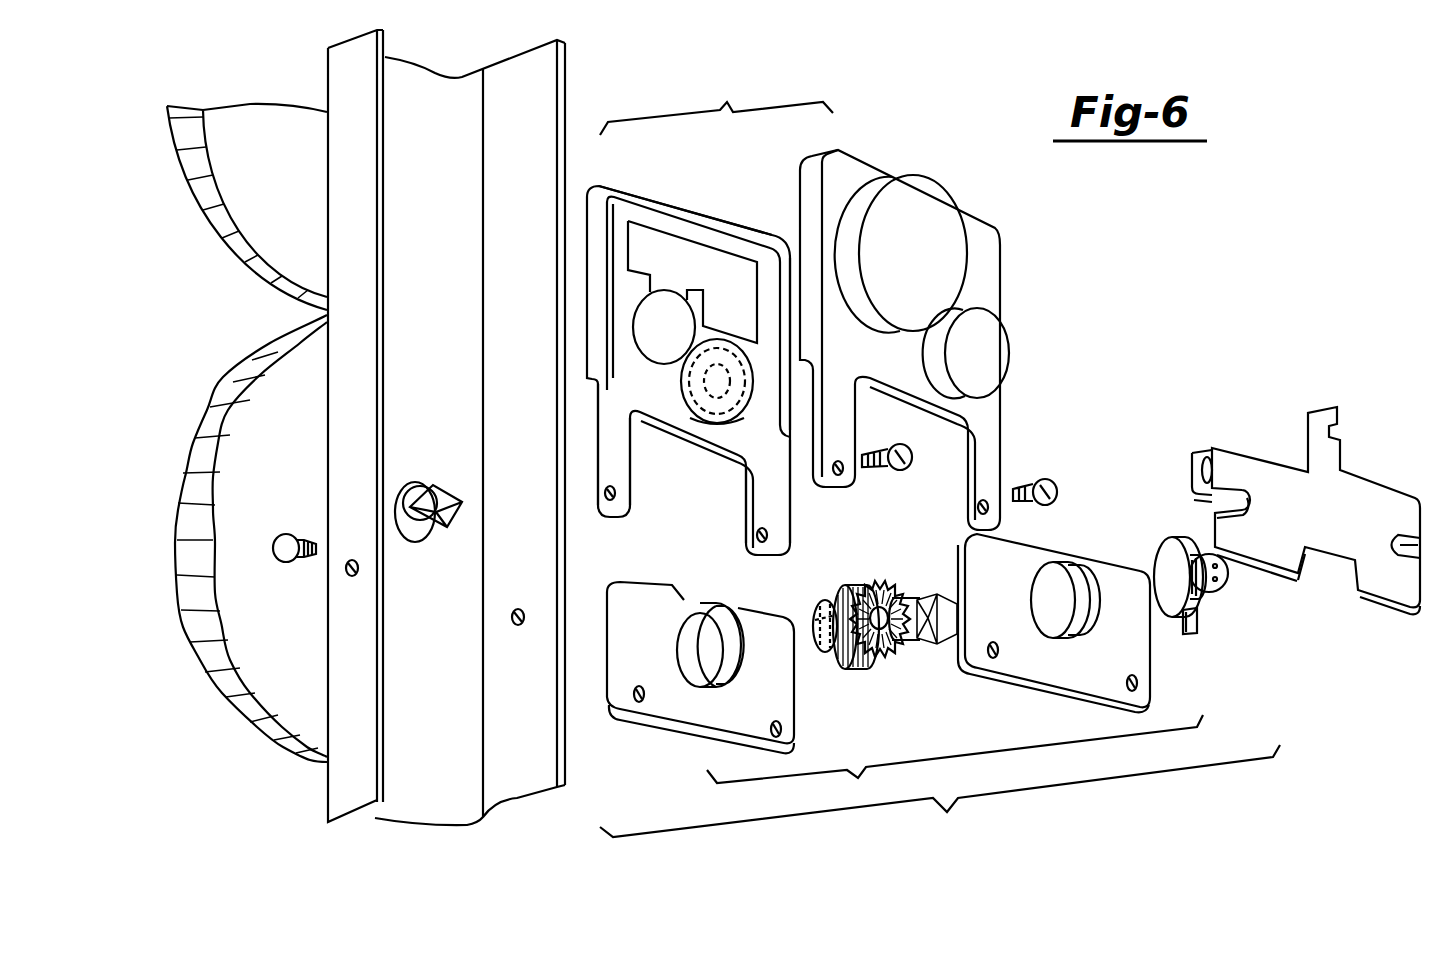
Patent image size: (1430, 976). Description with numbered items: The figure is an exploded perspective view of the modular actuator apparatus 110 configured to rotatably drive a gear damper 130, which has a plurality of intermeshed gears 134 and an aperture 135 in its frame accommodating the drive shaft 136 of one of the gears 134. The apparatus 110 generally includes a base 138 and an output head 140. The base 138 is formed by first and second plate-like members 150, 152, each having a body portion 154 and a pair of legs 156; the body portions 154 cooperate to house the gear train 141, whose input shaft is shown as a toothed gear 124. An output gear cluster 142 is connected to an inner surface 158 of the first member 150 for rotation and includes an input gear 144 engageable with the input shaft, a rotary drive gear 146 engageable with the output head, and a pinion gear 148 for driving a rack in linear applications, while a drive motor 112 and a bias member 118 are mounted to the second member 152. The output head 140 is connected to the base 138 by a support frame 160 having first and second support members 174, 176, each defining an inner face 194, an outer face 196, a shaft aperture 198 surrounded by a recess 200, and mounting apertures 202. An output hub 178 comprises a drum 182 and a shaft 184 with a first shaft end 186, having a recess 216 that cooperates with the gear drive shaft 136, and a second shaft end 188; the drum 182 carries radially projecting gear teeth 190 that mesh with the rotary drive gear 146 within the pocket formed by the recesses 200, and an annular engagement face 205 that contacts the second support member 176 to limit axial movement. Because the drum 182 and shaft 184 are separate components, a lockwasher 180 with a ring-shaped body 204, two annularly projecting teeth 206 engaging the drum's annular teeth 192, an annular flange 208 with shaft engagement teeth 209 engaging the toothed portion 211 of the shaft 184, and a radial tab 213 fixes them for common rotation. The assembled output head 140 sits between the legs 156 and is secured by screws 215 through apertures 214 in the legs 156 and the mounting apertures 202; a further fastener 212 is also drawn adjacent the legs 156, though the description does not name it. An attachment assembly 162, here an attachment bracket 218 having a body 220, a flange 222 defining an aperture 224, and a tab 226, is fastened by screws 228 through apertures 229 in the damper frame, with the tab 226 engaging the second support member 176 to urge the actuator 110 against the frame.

The modular actuator apparatus 110 is at (902, 130).
The drive motor 112 is at (983, 342).
The bias member 118 is at (930, 210).
The toothed gear 124 is at (664, 327).
The gear damper 130 is at (297, 86).
The intermeshed gears 134 is at (243, 175).
The aperture 135 is at (412, 482).
The drive shaft 136 is at (437, 522).
The base 138 is at (716, 96).
The output head 140 is at (940, 776).
The gear train 141 is at (696, 300).
The output gear cluster 142 is at (666, 408).
The input gear 144 is at (717, 433).
The rotary drive gear 146 is at (752, 380).
The pinion gear 148 is at (703, 383).
The first plate-like member 150 is at (782, 348).
The second plate-like member 152 is at (944, 330).
The body portion 154 is at (588, 272).
The legs 156 is at (592, 428).
The inner surface 158 is at (767, 273).
The support frame 160 is at (850, 675).
The attachment assembly 162 is at (1290, 422).
The first support member 174 is at (640, 712).
The second support member 176 is at (1060, 690).
The output hub 178 is at (896, 635).
The lockwasher 180 is at (1172, 591).
The drum 182 is at (895, 663).
The shaft 184 is at (836, 670).
The first shaft end 186 is at (817, 615).
The second shaft end 188 is at (957, 642).
The gear teeth 190 is at (855, 583).
The annular teeth 192 is at (937, 647).
The inner face 194 is at (690, 722).
The outer face 196 is at (607, 655).
The shaft aperture 198 is at (707, 680).
The recess 200 is at (740, 645).
The mounting apertures 202 is at (1125, 683).
The ring-shaped body 204 is at (1190, 560).
The annular engagement face 205 is at (882, 600).
The annularly projecting teeth 206 is at (1153, 567).
The annular flange 208 is at (1197, 618).
The shaft engagement teeth 209 is at (1210, 582).
The toothed portion 211 is at (900, 603).
The screw 212 is at (912, 452).
The radial tab 213 is at (1192, 637).
The apertures 214 is at (618, 497).
The screws 215 is at (1050, 485).
The recess 216 is at (825, 604).
The attachment bracket 218 is at (1286, 480).
The body 220 is at (1328, 523).
The flange 222 is at (1223, 460).
The aperture 224 is at (1207, 457).
The tab 226 is at (1333, 460).
The screws 228 is at (285, 560).
The apertures 229 is at (356, 575).